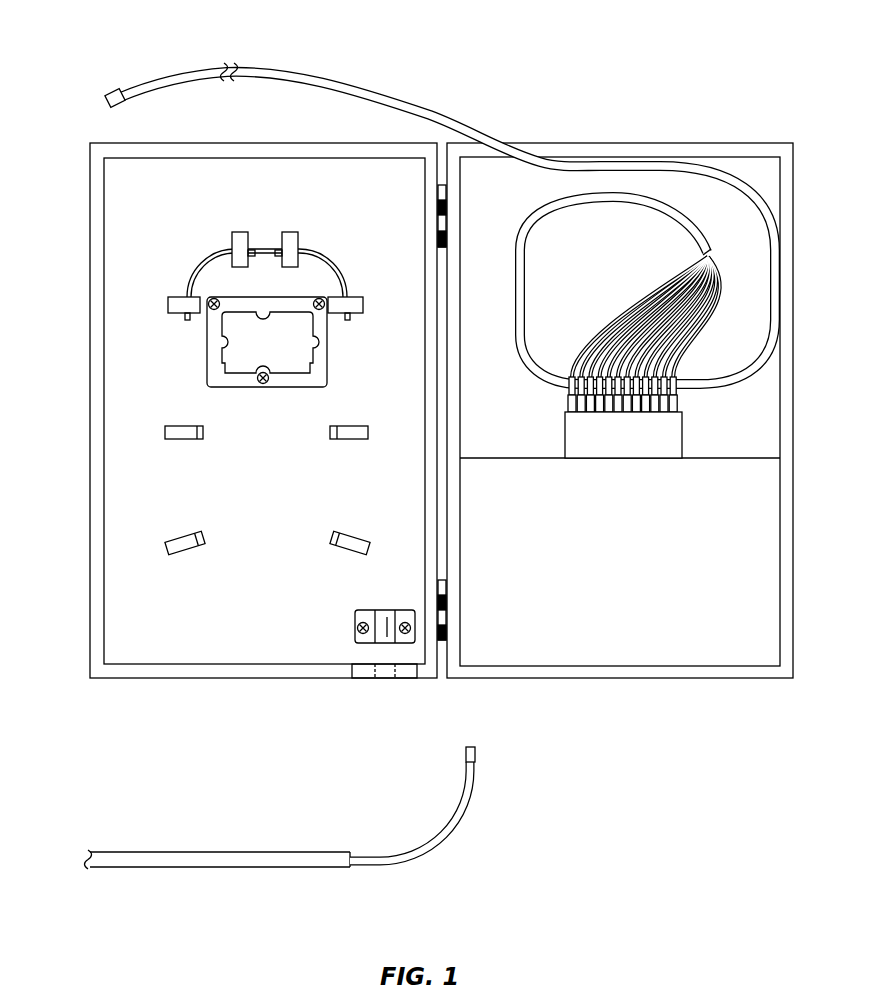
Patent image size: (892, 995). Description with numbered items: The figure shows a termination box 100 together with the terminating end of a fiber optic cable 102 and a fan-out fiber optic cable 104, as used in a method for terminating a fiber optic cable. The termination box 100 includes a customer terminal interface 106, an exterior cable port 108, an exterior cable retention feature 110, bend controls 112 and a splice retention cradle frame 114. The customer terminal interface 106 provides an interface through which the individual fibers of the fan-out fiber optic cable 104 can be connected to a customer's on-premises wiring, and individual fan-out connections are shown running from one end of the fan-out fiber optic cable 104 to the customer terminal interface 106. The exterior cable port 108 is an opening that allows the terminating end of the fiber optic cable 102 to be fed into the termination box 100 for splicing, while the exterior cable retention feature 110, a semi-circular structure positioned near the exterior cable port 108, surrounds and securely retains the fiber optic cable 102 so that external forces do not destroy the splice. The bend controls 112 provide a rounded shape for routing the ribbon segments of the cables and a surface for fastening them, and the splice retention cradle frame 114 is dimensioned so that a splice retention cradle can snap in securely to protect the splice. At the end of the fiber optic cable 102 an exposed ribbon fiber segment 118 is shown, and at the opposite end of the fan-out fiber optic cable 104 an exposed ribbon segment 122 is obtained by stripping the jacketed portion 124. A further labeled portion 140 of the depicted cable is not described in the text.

The termination box 100 is at (501, 68).
The fiber optic cable 102 is at (318, 835).
The fan-out fiber optic cable 104 is at (764, 194).
The customer terminal interface 106 is at (692, 432).
The exterior cable port 108 is at (388, 690).
The exterior cable retention feature 110 is at (460, 634).
The bend controls 112 is at (196, 268).
The splice retention cradle frame 114 is at (255, 388).
The exposed ribbon fiber segment 118 is at (477, 751).
The exposed ribbon segment 122 is at (110, 90).
The jacketed portion 124 is at (402, 90).
The cable bend section 140 is at (438, 834).